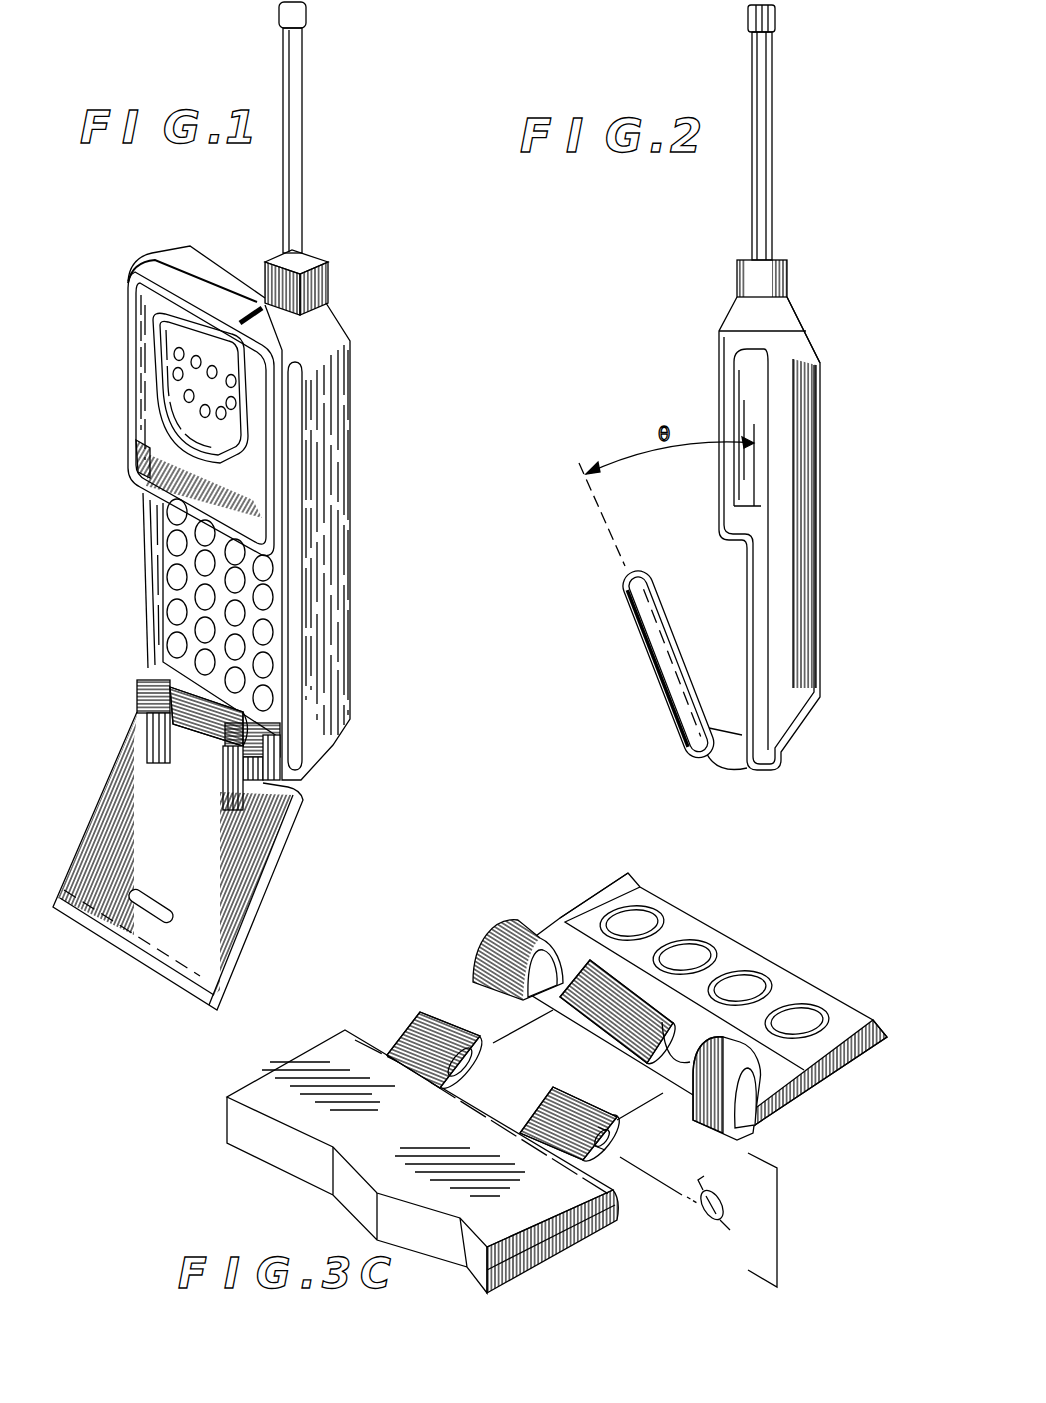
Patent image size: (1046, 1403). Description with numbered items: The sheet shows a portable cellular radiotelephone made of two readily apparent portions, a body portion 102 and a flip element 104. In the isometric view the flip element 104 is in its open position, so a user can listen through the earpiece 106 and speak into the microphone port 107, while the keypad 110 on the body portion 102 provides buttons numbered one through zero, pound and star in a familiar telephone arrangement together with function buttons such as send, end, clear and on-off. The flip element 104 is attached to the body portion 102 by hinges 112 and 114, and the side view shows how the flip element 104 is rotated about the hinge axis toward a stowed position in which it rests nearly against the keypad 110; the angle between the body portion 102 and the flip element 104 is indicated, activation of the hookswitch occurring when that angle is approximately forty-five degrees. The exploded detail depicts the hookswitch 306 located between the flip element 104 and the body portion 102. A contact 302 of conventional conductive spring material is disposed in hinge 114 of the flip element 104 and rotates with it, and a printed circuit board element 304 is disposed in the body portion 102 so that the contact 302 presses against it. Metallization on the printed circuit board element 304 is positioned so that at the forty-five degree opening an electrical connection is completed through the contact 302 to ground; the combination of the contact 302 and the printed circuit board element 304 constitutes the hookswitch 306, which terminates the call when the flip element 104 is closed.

In FIG. 1, the body portion 102 is at (133, 363).
In FIG. 2, the body portion 102 is at (740, 328).
In FIG. 3C, the body portion 102 is at (800, 1097).
In FIG. 1, the flip element 104 is at (127, 787).
In FIG. 2, the flip element 104 is at (650, 646).
In FIG. 3C, the flip element 104 is at (595, 1223).
In FIG. 1, the earpiece 106 is at (167, 408).
In FIG. 1, the microphone port 107 is at (130, 890).
In FIG. 1, the keypad 110 is at (167, 590).
In FIG. 3C, the keypad 110 is at (732, 960).
In FIG. 3C, the hinge 112 is at (433, 1007).
In FIG. 3C, the hinge 114 is at (567, 1100).
In FIG. 3C, the contact 302 is at (729, 1215).
In FIG. 3C, the printed circuit board element 304 is at (690, 1118).
In FIG. 3C, the hookswitch 306 is at (787, 1220).